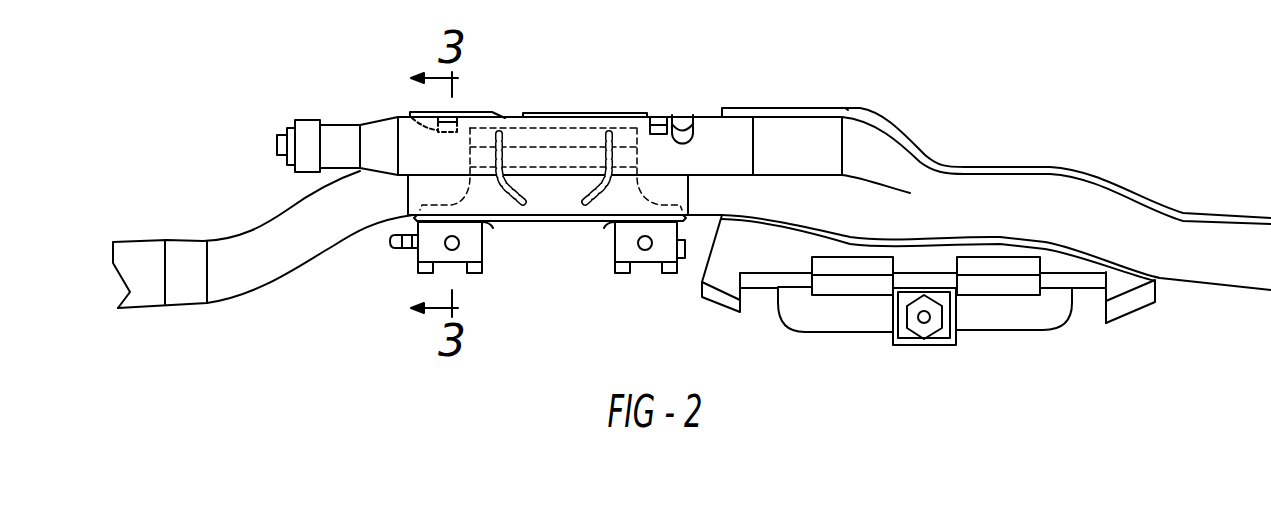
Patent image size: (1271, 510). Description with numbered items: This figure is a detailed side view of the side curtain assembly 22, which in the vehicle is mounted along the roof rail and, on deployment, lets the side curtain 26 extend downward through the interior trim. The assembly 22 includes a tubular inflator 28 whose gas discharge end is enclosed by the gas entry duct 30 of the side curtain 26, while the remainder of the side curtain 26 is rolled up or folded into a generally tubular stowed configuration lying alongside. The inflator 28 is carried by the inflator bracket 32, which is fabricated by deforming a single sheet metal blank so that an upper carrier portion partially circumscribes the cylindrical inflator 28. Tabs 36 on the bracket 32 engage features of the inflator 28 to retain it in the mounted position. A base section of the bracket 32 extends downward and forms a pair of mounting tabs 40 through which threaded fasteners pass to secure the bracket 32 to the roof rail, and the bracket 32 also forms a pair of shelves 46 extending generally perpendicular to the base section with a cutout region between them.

The side curtain assembly 22 is at (921, 86).
The side curtain 26 is at (965, 167).
The tubular inflator 28 is at (712, 115).
The gas entry duct 30 is at (807, 108).
The inflator bracket 32 is at (560, 105).
The tabs 36 is at (683, 117).
The mounting tabs 40 is at (612, 248).
The shelves 46 is at (417, 220).